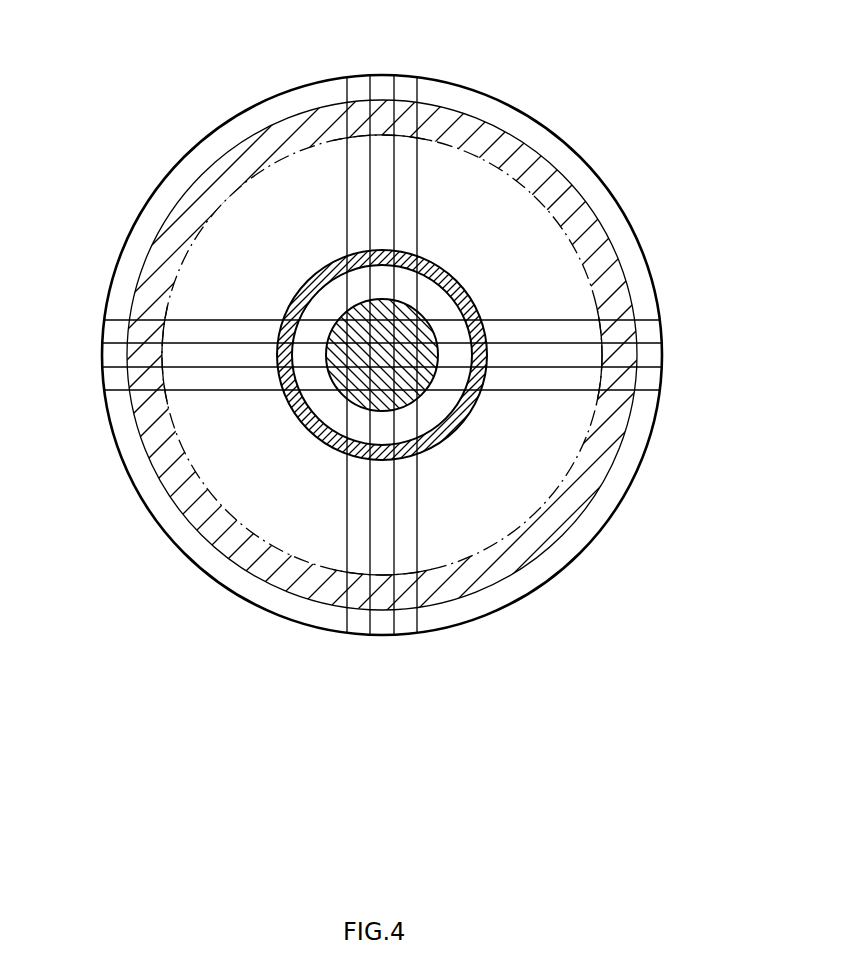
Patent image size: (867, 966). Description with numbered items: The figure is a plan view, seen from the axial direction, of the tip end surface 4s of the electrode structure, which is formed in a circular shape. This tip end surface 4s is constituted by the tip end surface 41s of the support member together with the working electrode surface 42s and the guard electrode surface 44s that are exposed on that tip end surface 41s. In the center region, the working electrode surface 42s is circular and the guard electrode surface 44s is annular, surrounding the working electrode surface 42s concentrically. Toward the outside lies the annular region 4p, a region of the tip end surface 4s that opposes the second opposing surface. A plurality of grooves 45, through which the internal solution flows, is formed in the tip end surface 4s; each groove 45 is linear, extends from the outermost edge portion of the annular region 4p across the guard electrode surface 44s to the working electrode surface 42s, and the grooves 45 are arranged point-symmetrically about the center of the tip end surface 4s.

The tip end surface of the electrode structure 4s is at (131, 80).
The annular region 4p is at (597, 248).
The grooves 45 is at (432, 122).
The tip end surface of the support member 41s is at (487, 497).
The guard electrode surface 44s is at (302, 290).
The working electrode surface 42s is at (427, 325).